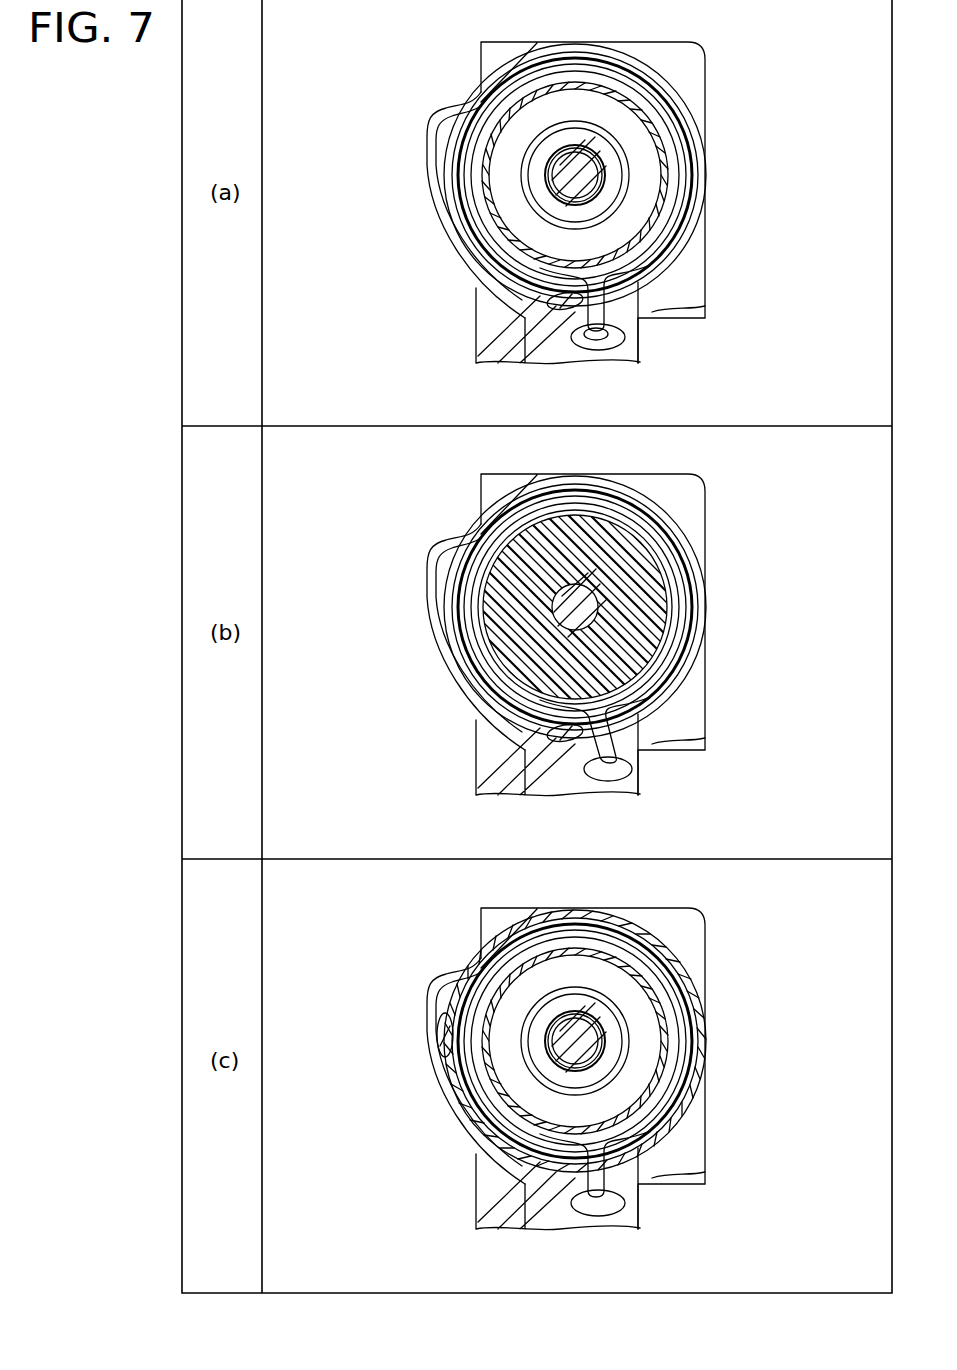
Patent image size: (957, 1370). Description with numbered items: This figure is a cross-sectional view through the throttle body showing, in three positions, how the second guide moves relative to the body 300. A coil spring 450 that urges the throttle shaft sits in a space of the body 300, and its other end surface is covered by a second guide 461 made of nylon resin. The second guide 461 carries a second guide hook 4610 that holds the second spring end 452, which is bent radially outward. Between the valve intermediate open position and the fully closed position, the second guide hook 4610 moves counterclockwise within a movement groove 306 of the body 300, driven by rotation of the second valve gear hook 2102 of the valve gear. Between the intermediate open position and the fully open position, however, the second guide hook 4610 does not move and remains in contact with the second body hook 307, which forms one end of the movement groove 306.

The coil spring 450 is at (487, 105).
The second guide 461 is at (690, 112).
The second valve gear hook 2102 is at (548, 300).
The movement groove 306 is at (645, 305).
The body 300 is at (535, 347).
The second body hook 307 is at (583, 326).
The second guide hook 4610 is at (640, 325).
The second spring end 452 is at (612, 1041).